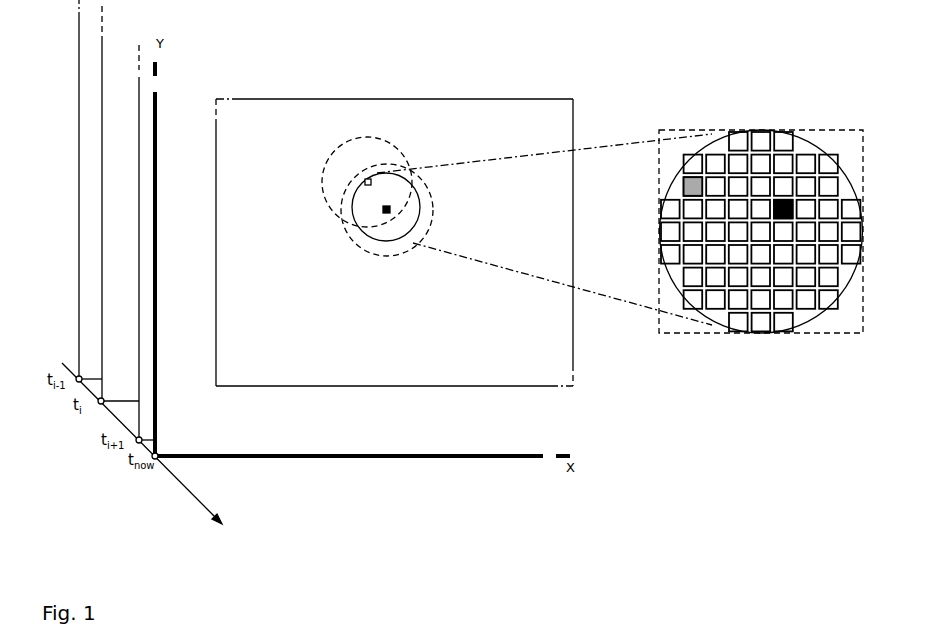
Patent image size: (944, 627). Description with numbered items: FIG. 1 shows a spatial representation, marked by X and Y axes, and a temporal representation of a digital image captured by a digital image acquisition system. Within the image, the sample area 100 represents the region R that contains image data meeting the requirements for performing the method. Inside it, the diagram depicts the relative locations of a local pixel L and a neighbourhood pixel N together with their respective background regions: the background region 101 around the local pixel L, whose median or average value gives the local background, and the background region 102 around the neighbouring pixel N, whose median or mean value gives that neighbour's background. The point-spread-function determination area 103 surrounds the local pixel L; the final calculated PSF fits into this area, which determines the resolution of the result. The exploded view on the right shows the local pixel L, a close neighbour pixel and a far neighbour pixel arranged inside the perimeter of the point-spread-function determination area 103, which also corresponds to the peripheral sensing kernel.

The sample area 100 is at (570, 92).
The background region of local pixel L 101 is at (423, 235).
The background region of neighbourhood pixel N 102 is at (372, 137).
The point-spread-function determination area 103 is at (410, 238).